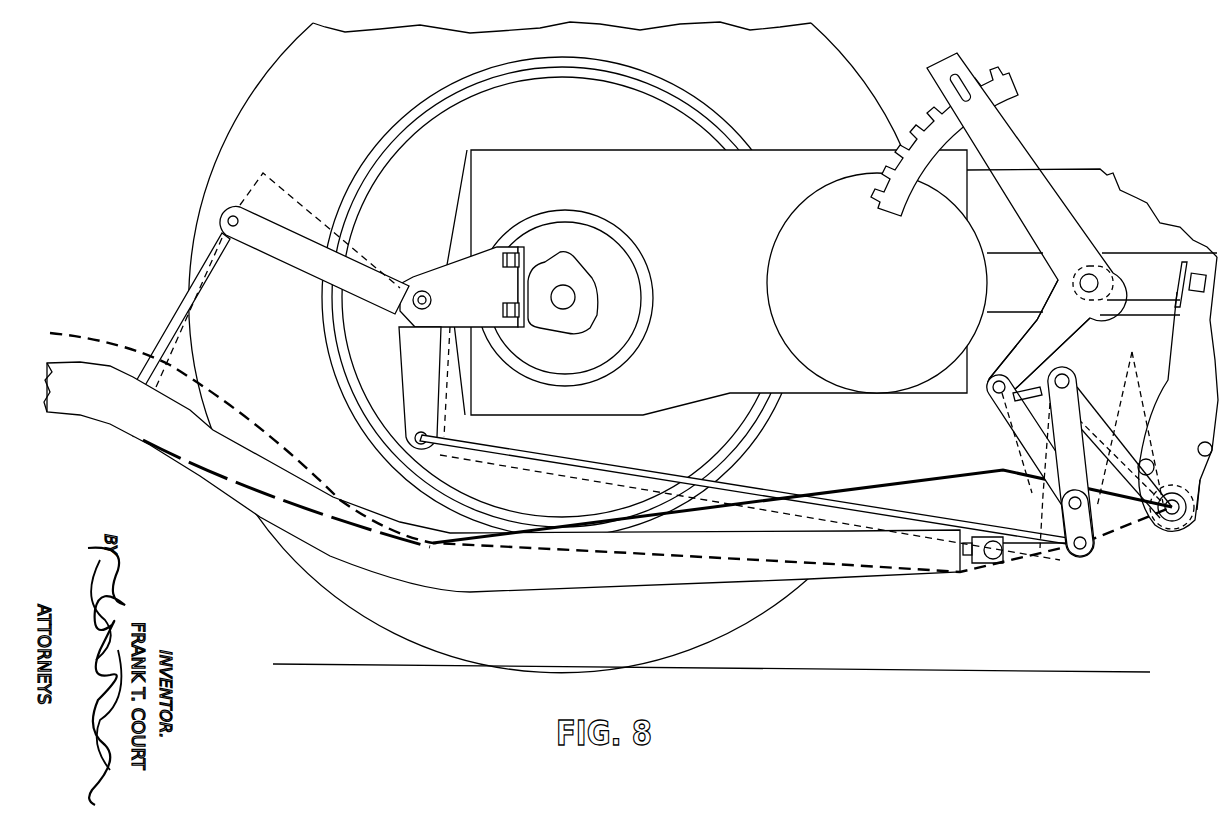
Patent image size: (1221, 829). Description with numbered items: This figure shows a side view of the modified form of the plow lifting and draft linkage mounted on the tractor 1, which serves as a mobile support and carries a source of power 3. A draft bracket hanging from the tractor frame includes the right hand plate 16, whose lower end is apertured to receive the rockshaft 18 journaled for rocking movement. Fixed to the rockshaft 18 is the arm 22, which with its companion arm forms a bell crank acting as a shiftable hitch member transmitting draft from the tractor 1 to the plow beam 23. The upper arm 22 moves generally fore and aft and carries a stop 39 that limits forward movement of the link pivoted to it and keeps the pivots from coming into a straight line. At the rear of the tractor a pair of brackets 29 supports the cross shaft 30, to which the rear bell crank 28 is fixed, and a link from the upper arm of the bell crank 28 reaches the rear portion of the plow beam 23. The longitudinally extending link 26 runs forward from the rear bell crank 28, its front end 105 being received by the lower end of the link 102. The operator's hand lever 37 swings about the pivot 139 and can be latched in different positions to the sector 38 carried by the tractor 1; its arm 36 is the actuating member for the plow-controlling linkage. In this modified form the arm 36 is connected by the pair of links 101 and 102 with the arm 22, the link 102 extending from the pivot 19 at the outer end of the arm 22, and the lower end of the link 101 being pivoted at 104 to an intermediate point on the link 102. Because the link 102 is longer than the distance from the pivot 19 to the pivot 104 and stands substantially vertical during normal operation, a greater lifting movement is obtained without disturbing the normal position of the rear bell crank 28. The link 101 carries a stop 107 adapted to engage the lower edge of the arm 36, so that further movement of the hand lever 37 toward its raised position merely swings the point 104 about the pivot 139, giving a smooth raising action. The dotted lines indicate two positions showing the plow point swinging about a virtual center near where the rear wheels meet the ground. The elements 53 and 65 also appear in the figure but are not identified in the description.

The tractor 1 is at (720, 142).
The source of power 3 is at (790, 230).
The right hand bracket plate 16 is at (1203, 512).
The rockshaft 18 is at (1165, 522).
The pivot 19 is at (1061, 373).
The arm 22 is at (1101, 410).
The plow beam 23 is at (635, 522).
The link 26 is at (712, 500).
The bell crank 28 is at (313, 225).
The brackets 29 is at (478, 265).
The cross shaft 30 is at (422, 291).
The arm 36 is at (1030, 322).
The hand lever 37 is at (1010, 145).
The sector 38 is at (996, 82).
The stop 39 is at (1145, 445).
The cable 53 is at (993, 467).
The hole 65 is at (1203, 442).
The link 101 is at (1022, 418).
The link 102 is at (1073, 397).
The pivot 104 is at (1063, 548).
The front end 105 is at (1088, 553).
The stop 107 is at (1028, 390).
The pivot 139 is at (1098, 284).